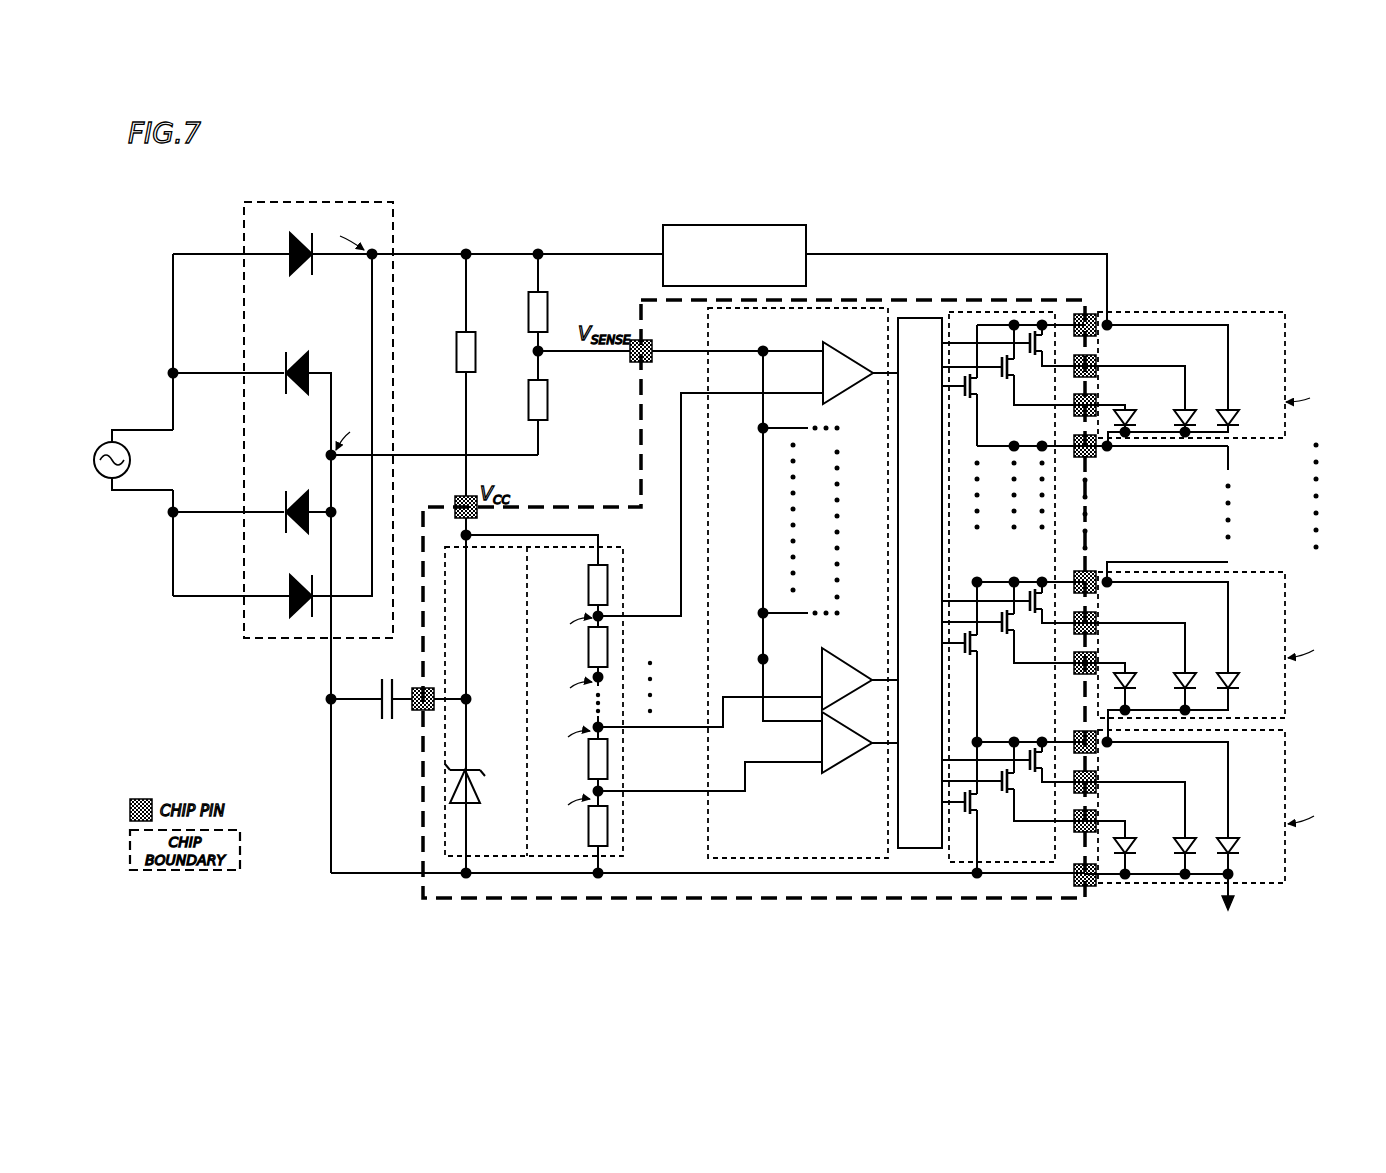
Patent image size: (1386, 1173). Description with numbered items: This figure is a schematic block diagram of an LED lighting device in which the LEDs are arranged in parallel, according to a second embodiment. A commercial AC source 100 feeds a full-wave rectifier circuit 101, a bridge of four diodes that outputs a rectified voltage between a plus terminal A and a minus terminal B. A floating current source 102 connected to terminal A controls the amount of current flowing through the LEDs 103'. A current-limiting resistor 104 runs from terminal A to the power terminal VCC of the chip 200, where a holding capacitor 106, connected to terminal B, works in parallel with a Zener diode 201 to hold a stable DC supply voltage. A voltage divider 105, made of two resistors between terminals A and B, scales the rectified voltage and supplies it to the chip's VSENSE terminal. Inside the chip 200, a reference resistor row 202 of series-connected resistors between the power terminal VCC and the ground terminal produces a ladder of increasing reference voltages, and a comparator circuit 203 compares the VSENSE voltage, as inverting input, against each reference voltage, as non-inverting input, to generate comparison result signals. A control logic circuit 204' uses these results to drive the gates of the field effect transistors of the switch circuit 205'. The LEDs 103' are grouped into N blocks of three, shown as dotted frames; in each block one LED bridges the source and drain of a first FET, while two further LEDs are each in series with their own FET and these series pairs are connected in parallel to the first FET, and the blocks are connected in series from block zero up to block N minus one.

The commercial AC source 100 is at (142, 497).
The full-wave rectifier circuit 101 is at (292, 248).
The floating current source 102 is at (660, 226).
The LEDs 103' is at (1219, 591).
The current-limiting resistor 104 is at (452, 372).
The voltage divider 105 is at (527, 318).
The holding capacitor 106 is at (376, 710).
The chip 200 is at (424, 902).
The Zener diode 201 is at (483, 792).
The reference resistor row 202 is at (608, 582).
The comparator circuit 203 is at (848, 388).
The control logic circuit 204' is at (920, 583).
The switch circuit 205' is at (1070, 606).